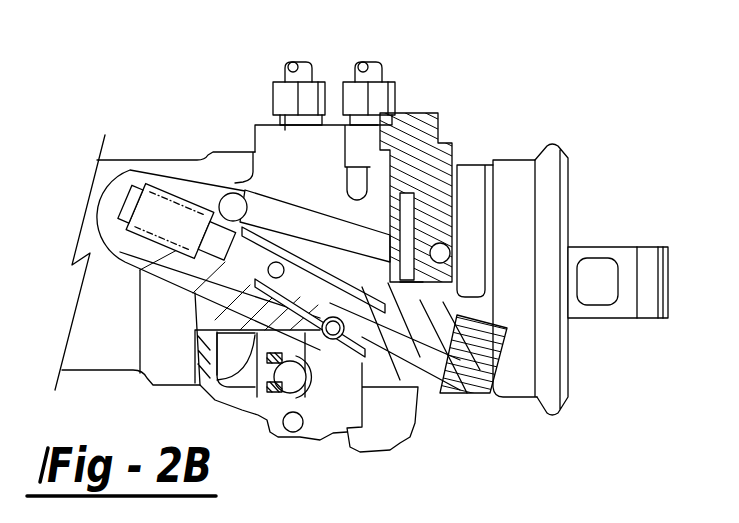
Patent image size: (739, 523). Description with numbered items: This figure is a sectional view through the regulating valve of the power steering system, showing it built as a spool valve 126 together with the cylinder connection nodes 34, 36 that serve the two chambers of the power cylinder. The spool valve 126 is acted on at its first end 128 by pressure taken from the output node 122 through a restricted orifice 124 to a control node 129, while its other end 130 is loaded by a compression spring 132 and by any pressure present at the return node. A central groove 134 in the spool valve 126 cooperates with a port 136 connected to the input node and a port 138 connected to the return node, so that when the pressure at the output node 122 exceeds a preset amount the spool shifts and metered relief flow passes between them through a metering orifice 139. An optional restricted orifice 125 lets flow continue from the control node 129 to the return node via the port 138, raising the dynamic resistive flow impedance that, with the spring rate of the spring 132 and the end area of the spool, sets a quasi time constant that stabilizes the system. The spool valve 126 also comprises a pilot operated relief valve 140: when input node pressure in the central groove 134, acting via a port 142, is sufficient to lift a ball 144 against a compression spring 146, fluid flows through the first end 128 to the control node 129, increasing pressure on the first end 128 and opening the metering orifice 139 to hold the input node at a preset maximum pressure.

The cylinder connection node 34 is at (296, 66).
The cylinder connection node 36 is at (366, 66).
The output node 122 is at (447, 180).
The restricted orifice 124 is at (400, 200).
The restricted orifice 125 is at (455, 217).
The spool valve 126 is at (422, 418).
The first end 128 is at (433, 400).
The control node 129 is at (483, 284).
The other end 130 is at (97, 243).
The compression spring 132 is at (156, 182).
The central groove 134 is at (268, 276).
The port 136 is at (207, 392).
The port 138 is at (182, 182).
The metering orifice 139 is at (262, 198).
The pilot operated relief valve 140 is at (277, 212).
The port 142 is at (193, 293).
The ball 144 is at (278, 190).
The compression spring 146 is at (307, 243).